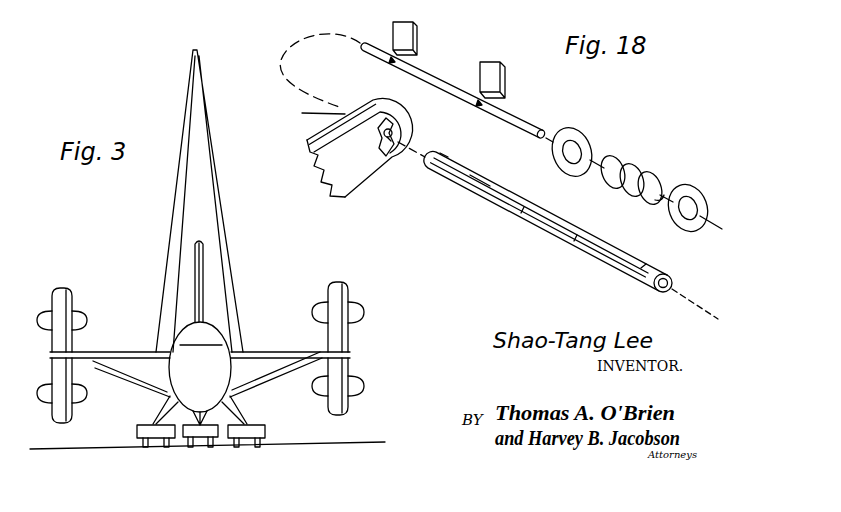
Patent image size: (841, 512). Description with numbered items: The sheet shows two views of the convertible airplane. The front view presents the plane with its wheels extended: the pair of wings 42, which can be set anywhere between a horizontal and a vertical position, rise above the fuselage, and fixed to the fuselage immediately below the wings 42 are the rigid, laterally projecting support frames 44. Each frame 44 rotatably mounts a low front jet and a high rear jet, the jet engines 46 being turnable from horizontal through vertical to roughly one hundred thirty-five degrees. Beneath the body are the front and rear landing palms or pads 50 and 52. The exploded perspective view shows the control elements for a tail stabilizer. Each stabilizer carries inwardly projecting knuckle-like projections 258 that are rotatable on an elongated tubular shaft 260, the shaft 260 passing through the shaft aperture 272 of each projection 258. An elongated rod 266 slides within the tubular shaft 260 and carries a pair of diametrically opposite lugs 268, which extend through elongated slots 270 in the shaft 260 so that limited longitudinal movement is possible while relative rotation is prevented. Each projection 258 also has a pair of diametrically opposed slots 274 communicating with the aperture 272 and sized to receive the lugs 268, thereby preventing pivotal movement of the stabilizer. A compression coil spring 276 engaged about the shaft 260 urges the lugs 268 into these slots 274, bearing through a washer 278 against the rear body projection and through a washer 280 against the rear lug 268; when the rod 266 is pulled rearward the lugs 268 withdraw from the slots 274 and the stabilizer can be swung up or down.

In FIG. 3, the wings 42 is at (159, 220).
In FIG. 3, the support frames 44 is at (273, 337).
In FIG. 3, the jet engines 46 is at (360, 284).
In FIG. 3, the front landing palms or pads 50 is at (123, 441).
In FIG. 18, the front landing palms or pads 50 is at (242, 9).
In FIG. 3, the rear landing palms or pads 52 is at (209, 454).
In FIG. 18, the rear landing palms or pads 52 is at (441, 1).
In FIG. 18, the knuckle-like projections 258 is at (312, 116).
In FIG. 18, the tubular shaft 260 is at (585, 249).
In FIG. 18, the rod 266 is at (440, 69).
In FIG. 18, the lugs 268 is at (497, 68).
In FIG. 18, the slots 270 is at (494, 193).
In FIG. 18, the shaft aperture 272 is at (396, 131).
In FIG. 18, the slots 274 is at (389, 150).
In FIG. 18, the compression coil spring 276 is at (638, 154).
In FIG. 18, the washer 278 is at (690, 188).
In FIG. 18, the washer 280 is at (573, 127).